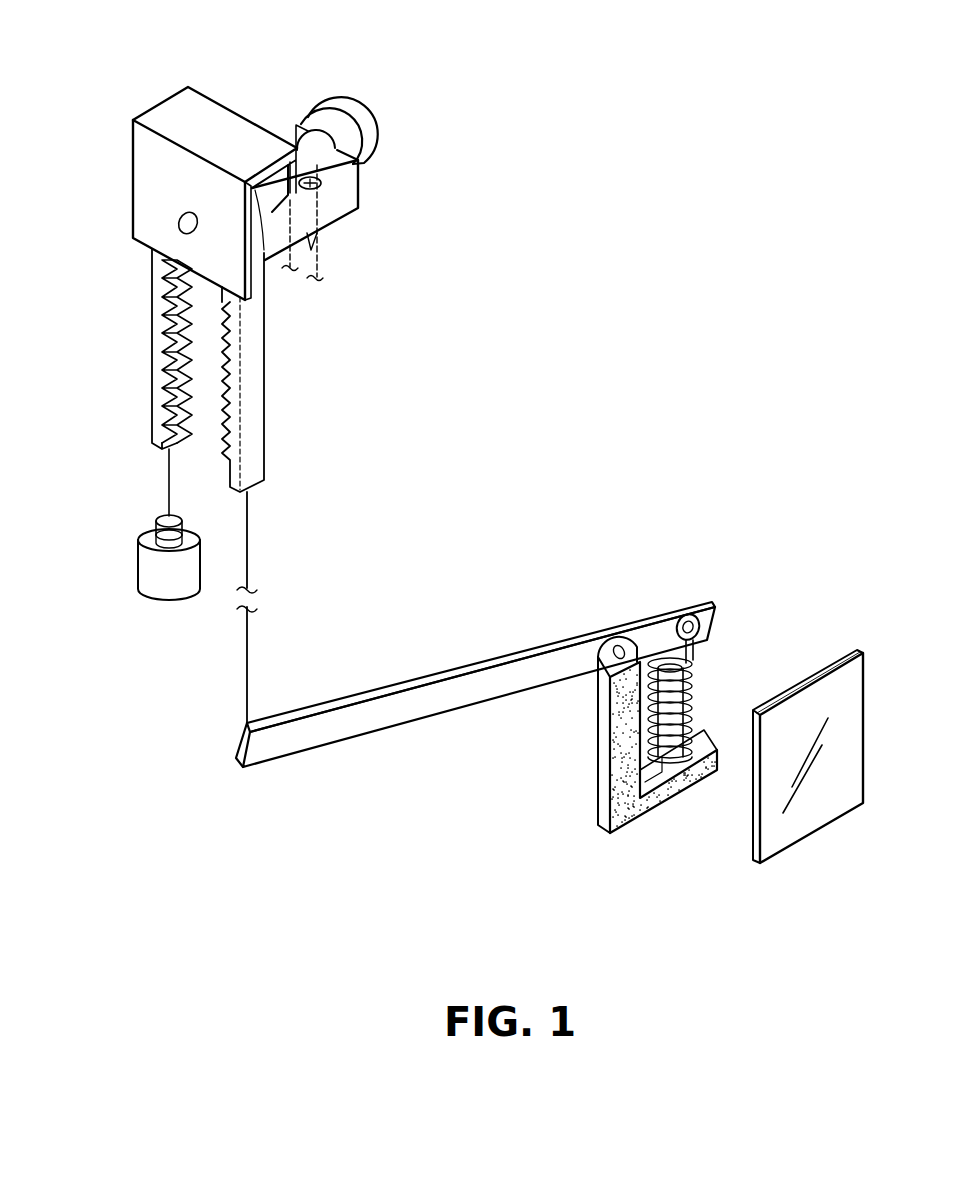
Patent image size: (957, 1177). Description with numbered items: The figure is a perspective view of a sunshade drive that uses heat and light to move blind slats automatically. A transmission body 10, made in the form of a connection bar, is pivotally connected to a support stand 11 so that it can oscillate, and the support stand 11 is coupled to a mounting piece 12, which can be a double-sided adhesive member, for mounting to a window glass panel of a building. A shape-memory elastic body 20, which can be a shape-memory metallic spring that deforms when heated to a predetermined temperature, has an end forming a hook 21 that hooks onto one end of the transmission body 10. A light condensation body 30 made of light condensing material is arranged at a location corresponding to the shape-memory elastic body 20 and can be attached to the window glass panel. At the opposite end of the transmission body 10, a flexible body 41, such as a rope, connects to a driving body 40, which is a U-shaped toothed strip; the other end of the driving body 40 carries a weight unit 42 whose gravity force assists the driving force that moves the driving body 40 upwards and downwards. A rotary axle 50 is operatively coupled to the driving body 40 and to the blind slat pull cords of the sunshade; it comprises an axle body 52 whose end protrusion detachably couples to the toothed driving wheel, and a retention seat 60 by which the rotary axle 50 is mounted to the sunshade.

The transmission body 10 is at (413, 700).
The support stand 11 is at (598, 655).
The mounting piece 12 is at (623, 805).
The shape-memory elastic body 20 is at (705, 686).
The hook 21 is at (698, 648).
The light condensation body 30 is at (823, 820).
The driving body 40 is at (253, 360).
The flexible body 41 is at (247, 548).
The weight unit 42 is at (148, 568).
The rotary axle 50 is at (301, 100).
The axle body 52 is at (350, 121).
The retention seat 60 is at (170, 116).